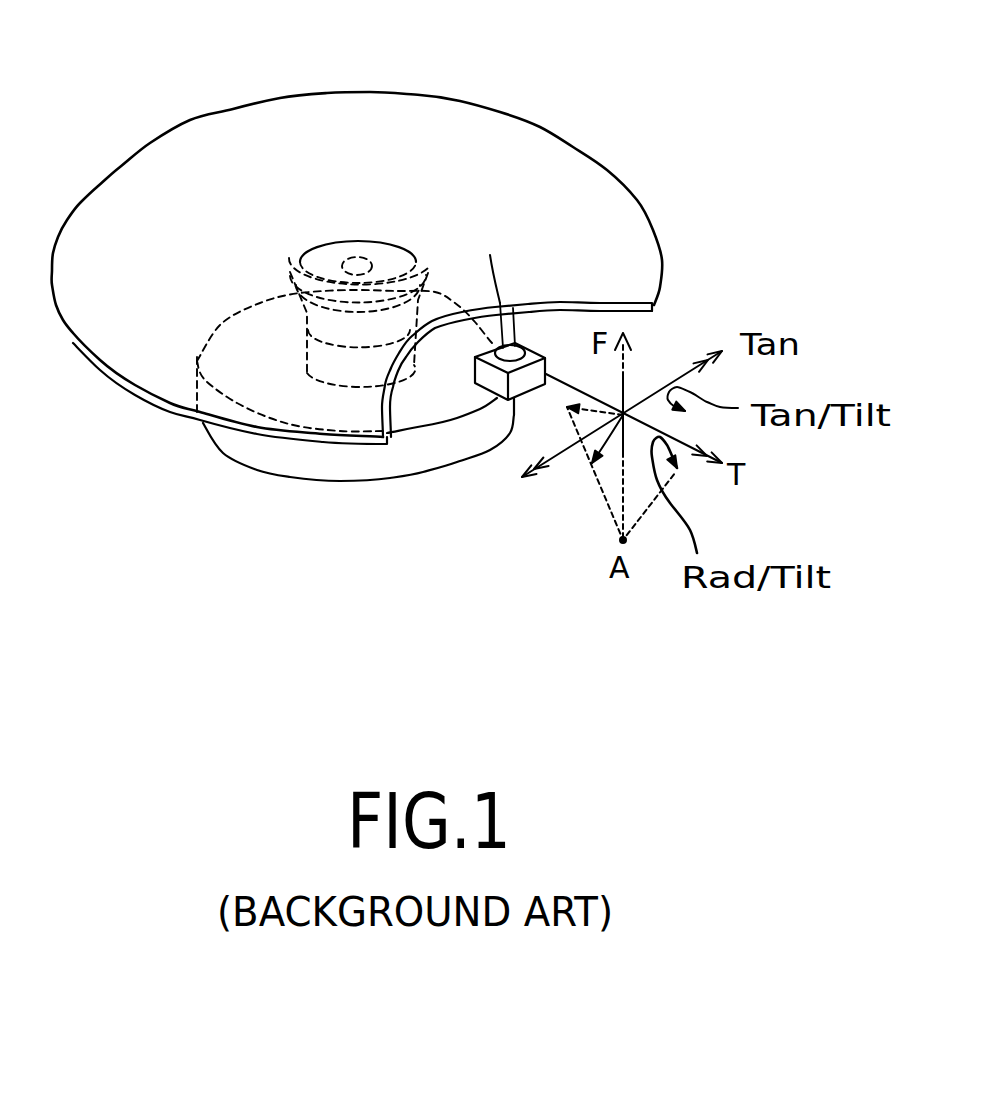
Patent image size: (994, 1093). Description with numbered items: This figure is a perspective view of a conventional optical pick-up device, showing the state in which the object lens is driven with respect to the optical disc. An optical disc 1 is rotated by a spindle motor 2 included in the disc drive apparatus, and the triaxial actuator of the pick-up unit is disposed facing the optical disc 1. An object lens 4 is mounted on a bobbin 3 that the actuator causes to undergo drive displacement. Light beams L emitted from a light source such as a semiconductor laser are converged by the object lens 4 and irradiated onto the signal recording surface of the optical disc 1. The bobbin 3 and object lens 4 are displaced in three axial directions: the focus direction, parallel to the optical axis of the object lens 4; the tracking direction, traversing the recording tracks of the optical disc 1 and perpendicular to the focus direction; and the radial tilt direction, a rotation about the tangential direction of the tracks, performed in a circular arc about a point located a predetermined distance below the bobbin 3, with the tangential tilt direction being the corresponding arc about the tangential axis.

The optical disc 1 is at (516, 141).
The spindle motor 2 is at (312, 455).
The bobbin 3 is at (495, 380).
The object lens 4 is at (528, 345).
The light beams L is at (486, 257).